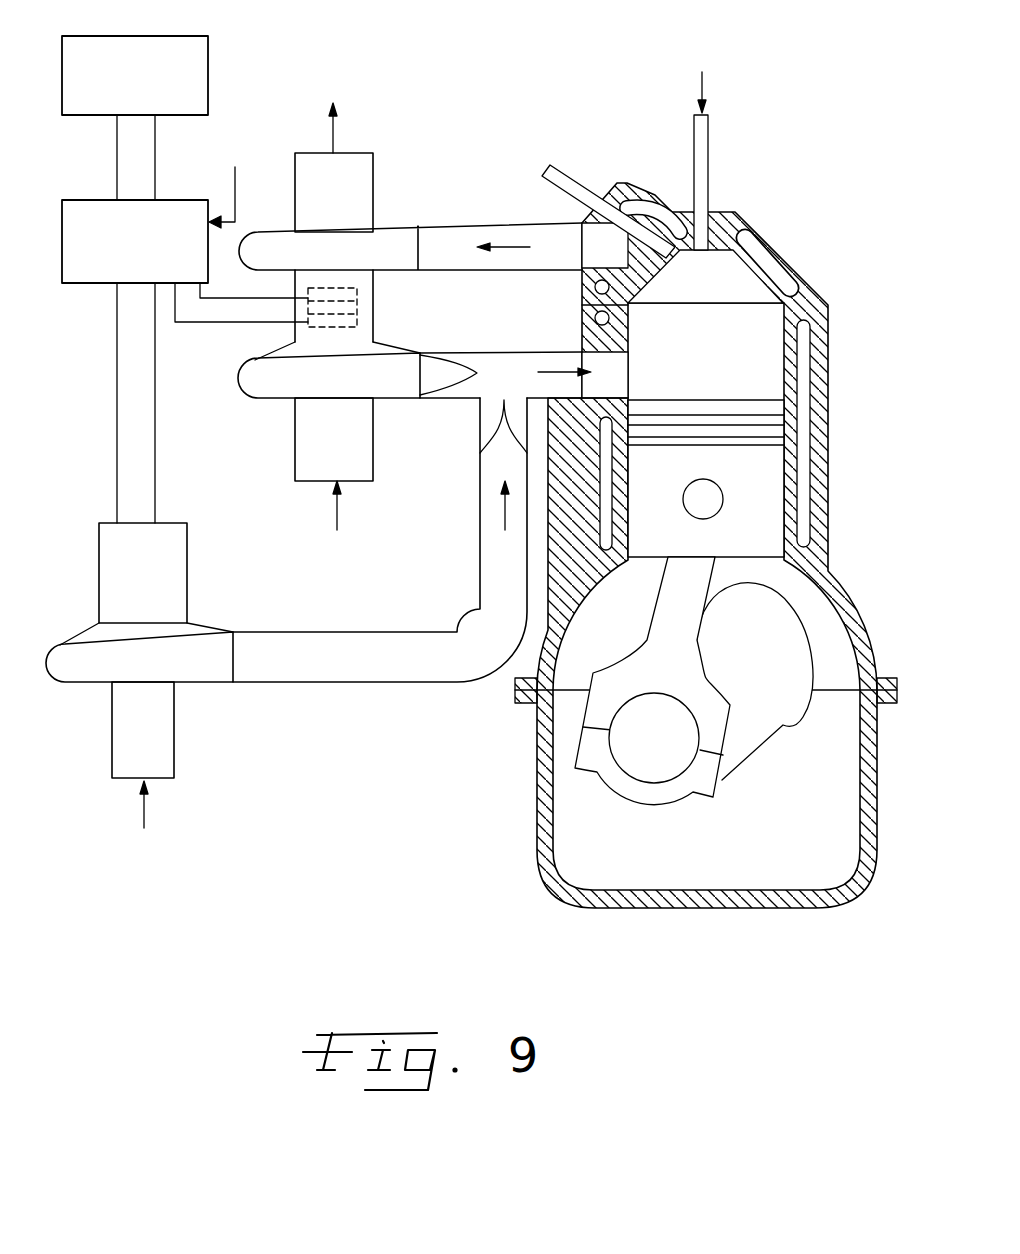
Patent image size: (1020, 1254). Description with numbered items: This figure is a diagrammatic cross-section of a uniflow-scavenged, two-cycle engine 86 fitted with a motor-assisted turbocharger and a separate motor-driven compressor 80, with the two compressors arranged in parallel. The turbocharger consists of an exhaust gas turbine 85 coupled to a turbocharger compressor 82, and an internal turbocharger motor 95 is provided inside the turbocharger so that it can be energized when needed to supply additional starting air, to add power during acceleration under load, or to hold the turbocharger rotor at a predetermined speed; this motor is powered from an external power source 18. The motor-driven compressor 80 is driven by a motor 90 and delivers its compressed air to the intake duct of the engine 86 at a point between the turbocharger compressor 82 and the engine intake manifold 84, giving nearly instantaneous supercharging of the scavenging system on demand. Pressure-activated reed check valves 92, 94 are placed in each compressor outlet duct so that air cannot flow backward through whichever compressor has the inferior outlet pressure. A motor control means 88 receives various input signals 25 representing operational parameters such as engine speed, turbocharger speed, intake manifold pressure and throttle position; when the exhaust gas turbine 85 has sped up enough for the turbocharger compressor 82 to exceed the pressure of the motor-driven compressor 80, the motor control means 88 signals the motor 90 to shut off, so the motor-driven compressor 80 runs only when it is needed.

The external power source 18 is at (150, 90).
The input signals 25 is at (235, 185).
The motor-driven compressor 80 is at (77, 675).
The turbocharger compressor 82 is at (255, 391).
The engine intake manifold 84 is at (582, 362).
The exhaust gas turbine 85 is at (243, 253).
The engine 86 is at (808, 281).
The motor control means 88 is at (152, 257).
The motor 90 is at (178, 568).
The reed check valve 92 is at (443, 364).
The reed check valve 94 is at (482, 428).
The turbocharger motor 95 is at (357, 310).